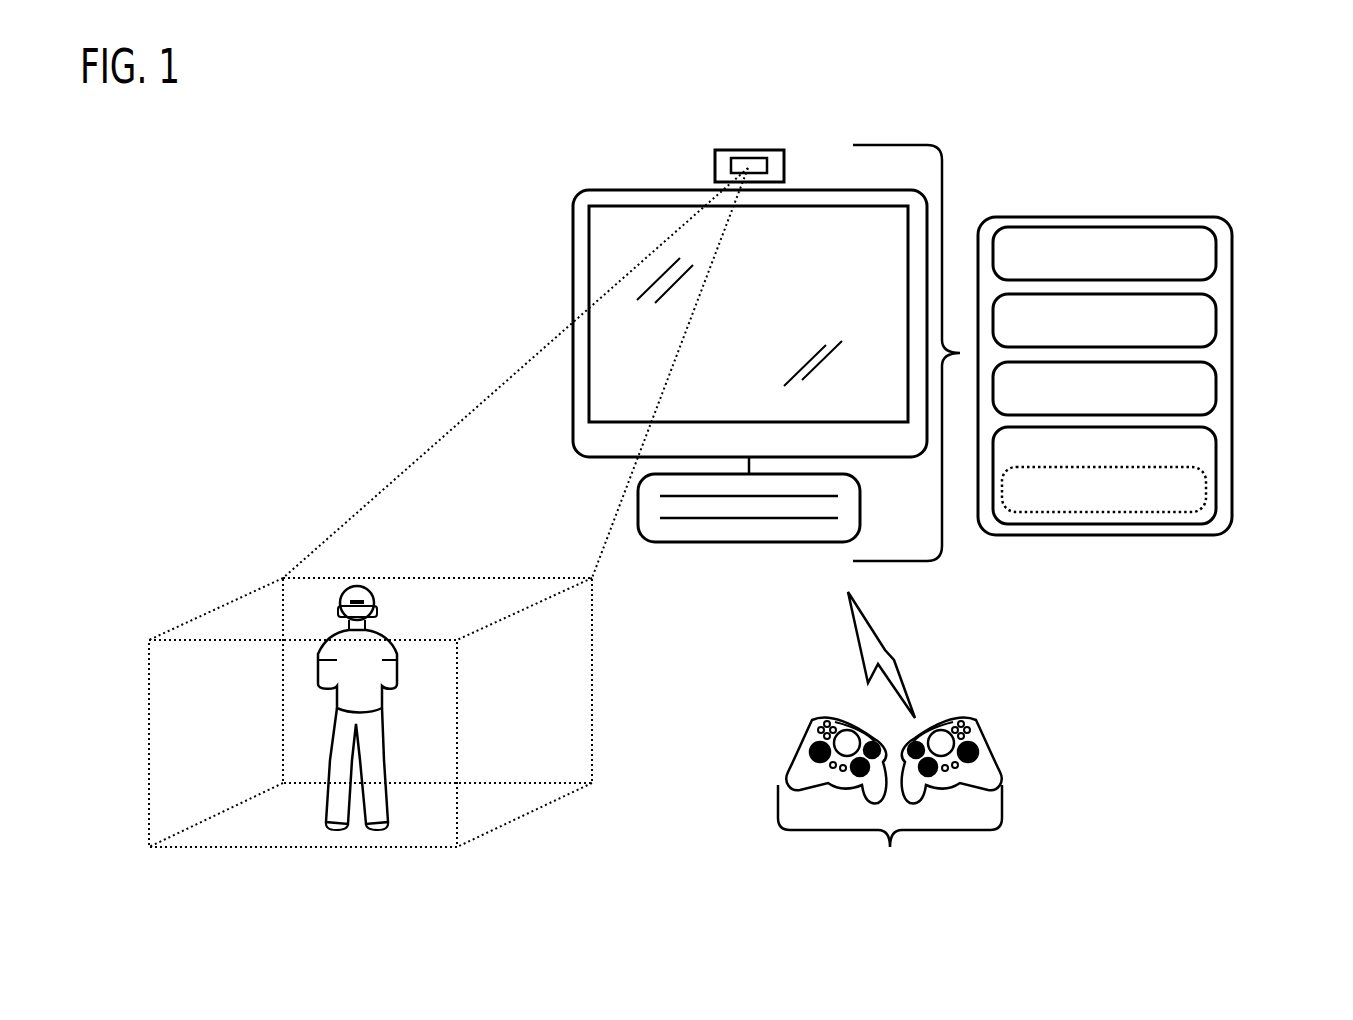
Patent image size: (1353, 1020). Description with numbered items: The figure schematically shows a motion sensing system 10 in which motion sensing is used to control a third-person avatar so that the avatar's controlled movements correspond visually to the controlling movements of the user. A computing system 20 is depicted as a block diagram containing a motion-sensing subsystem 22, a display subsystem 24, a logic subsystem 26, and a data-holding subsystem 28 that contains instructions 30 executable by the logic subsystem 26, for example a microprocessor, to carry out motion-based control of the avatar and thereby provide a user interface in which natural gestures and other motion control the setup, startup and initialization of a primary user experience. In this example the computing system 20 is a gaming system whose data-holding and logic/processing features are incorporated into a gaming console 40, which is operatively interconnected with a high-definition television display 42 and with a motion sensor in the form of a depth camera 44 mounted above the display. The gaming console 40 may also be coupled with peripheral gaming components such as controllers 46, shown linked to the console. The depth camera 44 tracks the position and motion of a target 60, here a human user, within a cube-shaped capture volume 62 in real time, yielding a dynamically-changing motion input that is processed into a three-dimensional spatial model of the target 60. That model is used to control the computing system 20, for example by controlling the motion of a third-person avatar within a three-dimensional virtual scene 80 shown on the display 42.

The system 10 is at (1265, 190).
The computing system 20 is at (1233, 333).
The motion-sensing subsystem 22 is at (1202, 266).
The display subsystem 24 is at (1159, 329).
The logic subsystem 26 is at (1147, 399).
The data-holding subsystem 28 is at (1190, 461).
The instructions 30 is at (1188, 500).
The gaming console 40 is at (740, 542).
The HDTV display 42 is at (573, 272).
The depth camera 44 is at (716, 151).
The controllers 46 is at (890, 737).
The target 60 is at (368, 684).
The capture volume 62 is at (591, 662).
The 3D virtual scene 80 is at (857, 302).